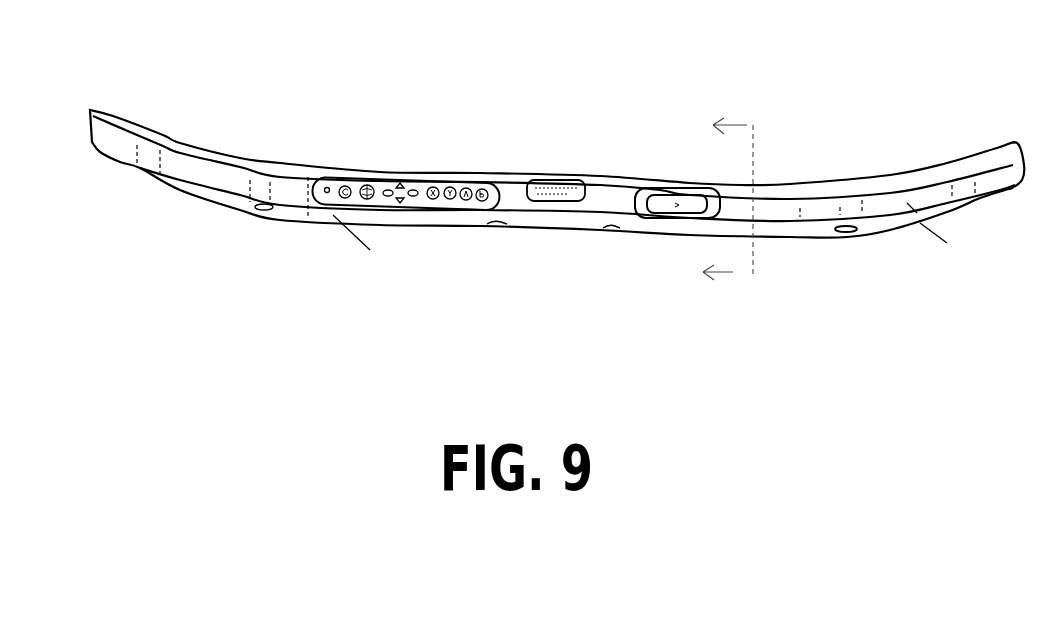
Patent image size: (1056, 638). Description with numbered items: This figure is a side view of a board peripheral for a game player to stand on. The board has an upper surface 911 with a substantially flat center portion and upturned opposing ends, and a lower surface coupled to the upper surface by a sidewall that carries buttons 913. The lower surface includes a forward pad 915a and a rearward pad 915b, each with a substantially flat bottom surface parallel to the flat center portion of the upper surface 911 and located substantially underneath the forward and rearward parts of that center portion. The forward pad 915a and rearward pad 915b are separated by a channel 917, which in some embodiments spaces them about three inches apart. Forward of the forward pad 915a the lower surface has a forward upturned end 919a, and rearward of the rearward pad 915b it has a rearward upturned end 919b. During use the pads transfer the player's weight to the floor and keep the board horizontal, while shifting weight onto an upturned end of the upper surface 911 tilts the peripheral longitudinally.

The upper surface 911 is at (585, 178).
The buttons 913 is at (423, 185).
The forward pad 915a is at (387, 230).
The rearward pad 915b is at (818, 243).
The channel 917 is at (563, 230).
The forward upturned end 919a is at (177, 192).
The rearward upturned end 919b is at (962, 207).